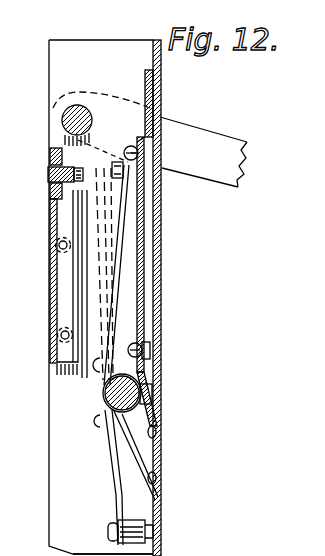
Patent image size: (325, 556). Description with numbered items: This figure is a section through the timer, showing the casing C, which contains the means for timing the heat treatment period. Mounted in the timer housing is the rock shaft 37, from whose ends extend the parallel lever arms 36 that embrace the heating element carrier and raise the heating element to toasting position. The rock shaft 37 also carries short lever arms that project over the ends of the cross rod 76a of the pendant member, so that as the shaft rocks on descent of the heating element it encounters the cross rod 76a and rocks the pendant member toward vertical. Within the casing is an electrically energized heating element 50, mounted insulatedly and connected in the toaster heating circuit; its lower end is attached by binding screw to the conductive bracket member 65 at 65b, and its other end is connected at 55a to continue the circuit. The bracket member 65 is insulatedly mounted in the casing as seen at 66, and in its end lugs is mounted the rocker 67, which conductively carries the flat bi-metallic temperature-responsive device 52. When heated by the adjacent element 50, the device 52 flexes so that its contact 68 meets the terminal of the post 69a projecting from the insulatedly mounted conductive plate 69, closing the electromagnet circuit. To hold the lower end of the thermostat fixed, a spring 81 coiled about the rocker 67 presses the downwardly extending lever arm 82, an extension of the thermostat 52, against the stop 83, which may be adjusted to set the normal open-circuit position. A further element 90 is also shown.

The casing C is at (160, 253).
The lever arm 36 is at (217, 134).
The rock shaft 37 is at (62, 121).
The heating element 50 is at (162, 224).
The temperature-responsive device 52 is at (112, 311).
The heating coil connection 55a is at (162, 132).
The conductive bracket member 65 is at (150, 390).
The binding screw attachment 65b is at (150, 351).
The insulated mounting 66 is at (160, 276).
The rocker 67 is at (103, 400).
The contact 68 is at (52, 154).
The conductive plate 69 is at (53, 193).
The post 69a is at (50, 172).
The cross rod 76a is at (153, 551).
The spring 81 is at (128, 449).
The lever arm 82 is at (117, 500).
The stop 83 is at (135, 519).
The strut 90 is at (160, 479).